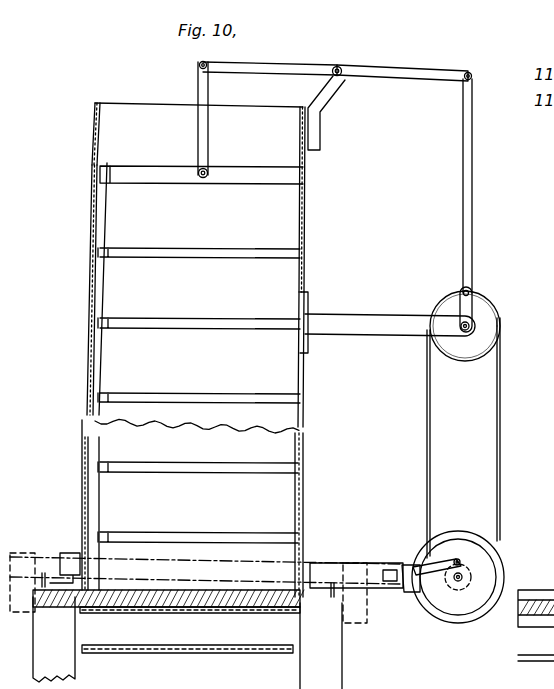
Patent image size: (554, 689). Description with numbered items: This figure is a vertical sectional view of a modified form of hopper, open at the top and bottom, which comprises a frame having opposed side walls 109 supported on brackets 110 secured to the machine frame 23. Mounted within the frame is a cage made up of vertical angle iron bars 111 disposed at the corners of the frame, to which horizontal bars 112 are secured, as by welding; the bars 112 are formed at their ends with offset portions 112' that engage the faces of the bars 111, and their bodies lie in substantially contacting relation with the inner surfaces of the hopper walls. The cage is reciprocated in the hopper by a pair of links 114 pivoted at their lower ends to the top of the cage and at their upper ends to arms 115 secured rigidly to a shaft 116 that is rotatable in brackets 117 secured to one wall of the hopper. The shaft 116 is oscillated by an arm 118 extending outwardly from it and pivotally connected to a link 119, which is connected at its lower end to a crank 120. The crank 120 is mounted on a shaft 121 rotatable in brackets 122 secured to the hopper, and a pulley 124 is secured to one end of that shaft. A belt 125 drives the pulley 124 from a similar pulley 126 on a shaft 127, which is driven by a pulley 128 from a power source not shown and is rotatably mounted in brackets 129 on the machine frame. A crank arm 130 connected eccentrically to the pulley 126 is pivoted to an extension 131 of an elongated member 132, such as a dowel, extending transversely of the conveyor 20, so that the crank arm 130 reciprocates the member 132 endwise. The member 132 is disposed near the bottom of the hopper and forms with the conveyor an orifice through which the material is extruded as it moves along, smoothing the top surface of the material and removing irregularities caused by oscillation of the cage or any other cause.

The conveyor 20 is at (205, 653).
The machine frame 23 is at (330, 668).
The side walls 109 is at (95, 139).
The brackets 110 is at (82, 488).
The vertical angle iron bars 111 is at (100, 228).
The horizontal bars 112 is at (199, 383).
The offset portions 112' is at (199, 308).
The links 114 is at (198, 82).
The arms 115 is at (283, 63).
The shaft 116 is at (340, 66).
The brackets 117 is at (323, 111).
The arm 118 is at (408, 65).
The link 119 is at (468, 172).
The crank 120 is at (470, 308).
The shaft 121 is at (470, 327).
The brackets 122 is at (367, 317).
The pulley 124 is at (467, 352).
The belt 125 is at (497, 465).
The pulley 126 is at (472, 557).
The shaft 127 is at (455, 587).
The pulley 128 is at (465, 532).
The brackets 129 is at (407, 585).
The crank arm 130 is at (416, 559).
The extension 131 is at (327, 563).
The elongated member 132 is at (138, 572).